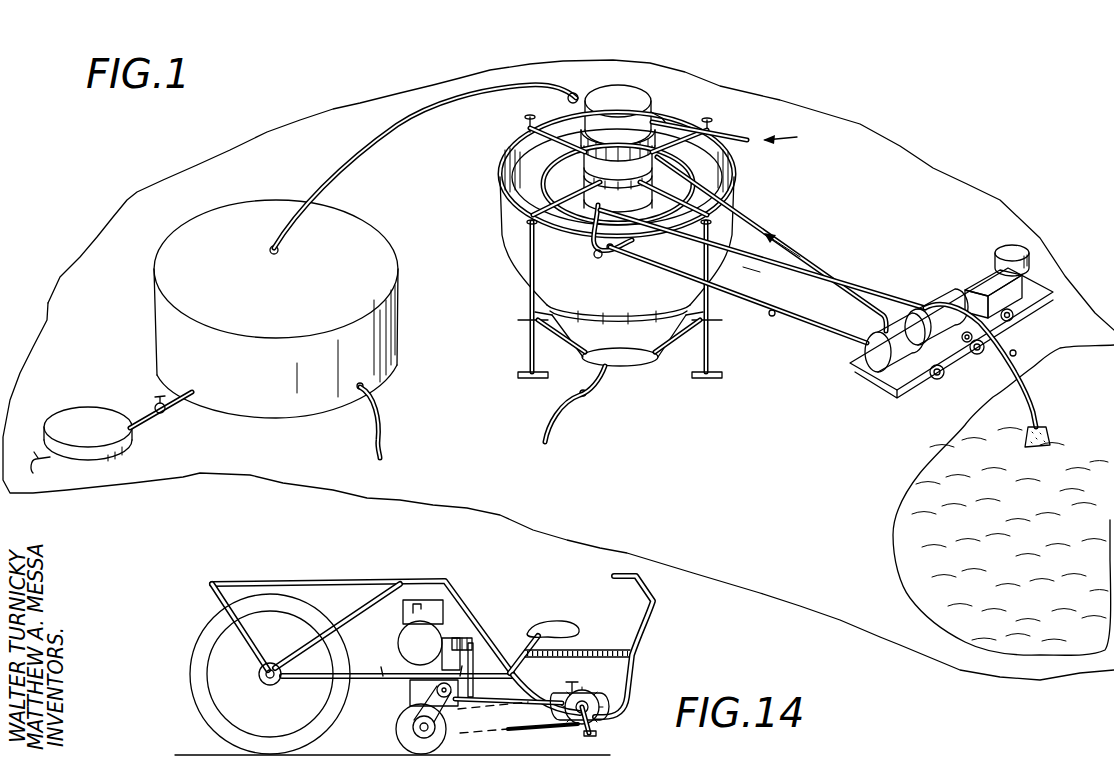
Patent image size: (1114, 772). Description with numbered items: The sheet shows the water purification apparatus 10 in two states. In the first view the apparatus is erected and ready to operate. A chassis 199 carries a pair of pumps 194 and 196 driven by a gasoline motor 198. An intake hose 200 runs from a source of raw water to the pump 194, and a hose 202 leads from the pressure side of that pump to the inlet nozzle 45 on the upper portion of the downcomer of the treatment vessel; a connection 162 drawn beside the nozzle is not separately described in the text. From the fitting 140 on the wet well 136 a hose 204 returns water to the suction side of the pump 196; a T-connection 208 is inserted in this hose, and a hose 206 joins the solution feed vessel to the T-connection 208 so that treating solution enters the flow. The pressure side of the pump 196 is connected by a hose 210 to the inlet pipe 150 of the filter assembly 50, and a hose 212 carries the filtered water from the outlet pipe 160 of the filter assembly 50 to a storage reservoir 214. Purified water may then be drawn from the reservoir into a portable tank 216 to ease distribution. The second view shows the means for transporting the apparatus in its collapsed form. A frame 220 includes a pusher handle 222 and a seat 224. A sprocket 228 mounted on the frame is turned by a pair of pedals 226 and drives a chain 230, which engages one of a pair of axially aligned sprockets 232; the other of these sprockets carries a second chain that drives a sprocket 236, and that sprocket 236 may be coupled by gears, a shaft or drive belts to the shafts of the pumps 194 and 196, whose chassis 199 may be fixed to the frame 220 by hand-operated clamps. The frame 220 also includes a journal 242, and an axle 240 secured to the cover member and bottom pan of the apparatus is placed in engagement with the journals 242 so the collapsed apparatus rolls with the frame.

In FIG. 1, the mobile apparatus 10 is at (478, 202).
In FIG. 14, the mobile apparatus 10 is at (186, 720).
In FIG. 1, the inlet nozzle 45 is at (607, 205).
In FIG. 1, the filter assembly 50 is at (648, 241).
In FIG. 1, the wet well 136 is at (730, 162).
In FIG. 1, the fitting 140 is at (630, 238).
In FIG. 1, the inlet pipe 150 is at (703, 135).
In FIG. 1, the outlet pipe 160 is at (575, 94).
In FIG. 1, the connector 162 is at (656, 118).
In FIG. 1, the pump 194 is at (923, 317).
In FIG. 1, the pump 196 is at (880, 355).
In FIG. 14, the pump 196 is at (436, 652).
In FIG. 1, the gasoline motor 198 is at (1027, 280).
In FIG. 1, the chassis 199 is at (1040, 302).
In FIG. 1, the intake hose 200 is at (1027, 397).
In FIG. 1, the hose 202 is at (873, 297).
In FIG. 1, the hose 204 is at (827, 327).
In FIG. 1, the hose 206 is at (597, 253).
In FIG. 1, the T-connection 208 is at (591, 269).
In FIG. 1, the hose 210 is at (750, 228).
In FIG. 1, the hose 212 is at (405, 140).
In FIG. 1, the storage reservoir 214 is at (345, 312).
In FIG. 1, the portable tank 216 is at (104, 438).
In FIG. 14, the frame 220 is at (420, 562).
In FIG. 14, the pusher handle 222 is at (654, 606).
In FIG. 14, the seat 224 is at (567, 592).
In FIG. 14, the pedals 226 is at (597, 738).
In FIG. 14, the sprocket 228 is at (613, 672).
In FIG. 14, the chain 230 is at (512, 736).
In FIG. 14, the axially aligned sprockets 232 is at (418, 712).
In FIG. 14, the sprocket 236 is at (508, 673).
In FIG. 14, the axle 240 is at (258, 678).
In FIG. 14, the journal 242 is at (256, 670).